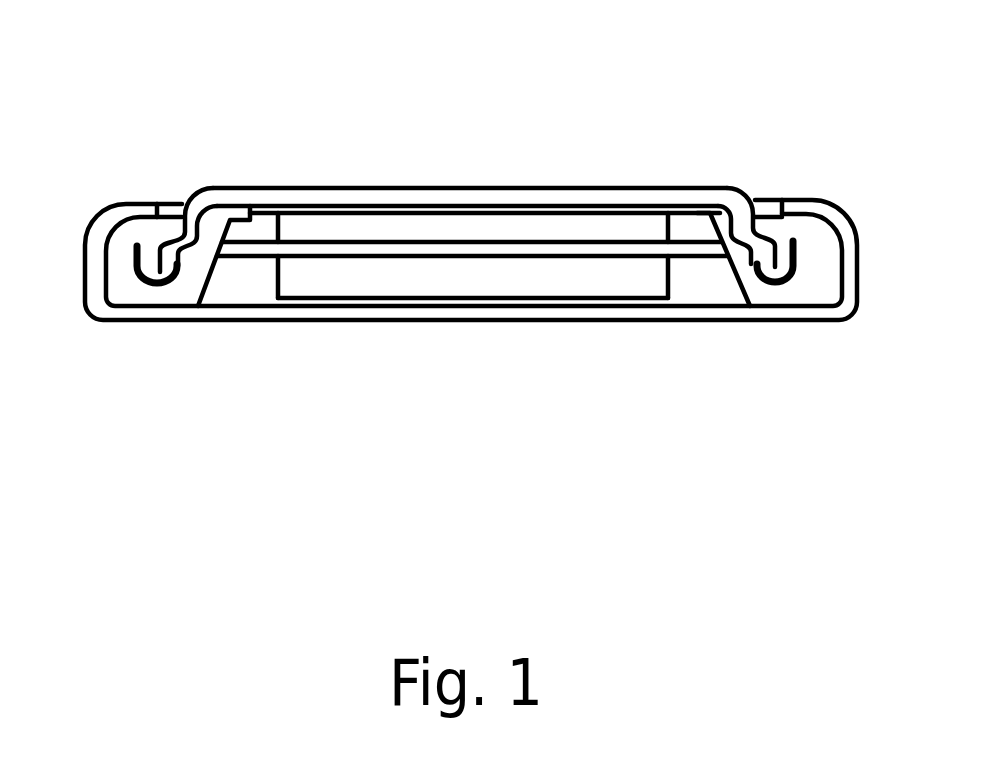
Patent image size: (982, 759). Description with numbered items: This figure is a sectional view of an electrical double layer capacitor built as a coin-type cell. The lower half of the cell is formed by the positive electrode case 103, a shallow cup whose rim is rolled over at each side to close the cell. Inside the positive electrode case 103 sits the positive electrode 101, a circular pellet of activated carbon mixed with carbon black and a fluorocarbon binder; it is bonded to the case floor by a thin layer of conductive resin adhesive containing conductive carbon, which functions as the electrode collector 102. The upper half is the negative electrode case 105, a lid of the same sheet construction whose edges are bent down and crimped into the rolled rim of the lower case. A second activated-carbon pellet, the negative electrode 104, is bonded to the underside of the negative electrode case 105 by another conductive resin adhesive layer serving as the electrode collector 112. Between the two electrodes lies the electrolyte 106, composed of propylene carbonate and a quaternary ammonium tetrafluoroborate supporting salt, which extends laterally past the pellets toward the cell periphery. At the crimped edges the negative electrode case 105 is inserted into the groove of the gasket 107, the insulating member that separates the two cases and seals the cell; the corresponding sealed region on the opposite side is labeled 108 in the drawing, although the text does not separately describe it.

The positive electrode 101 is at (517, 283).
The electrode collector 102 is at (468, 297).
The positive electrode case 103 is at (248, 312).
The negative electrode 104 is at (508, 227).
The negative electrode case 105 is at (303, 197).
The electrolyte 106 is at (700, 258).
The gasket 107 is at (167, 215).
The sealing member 108 is at (700, 223).
The electrode collector 112 is at (438, 212).